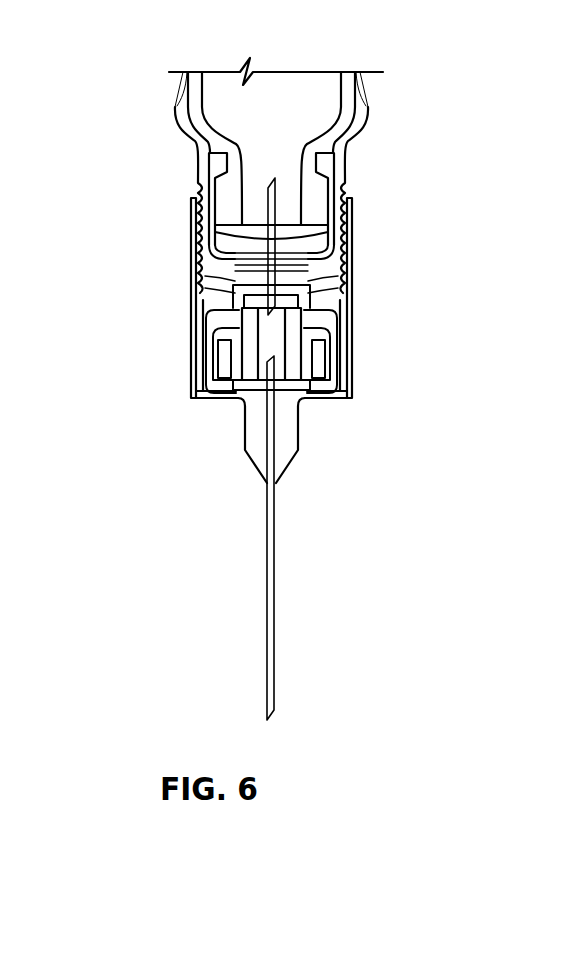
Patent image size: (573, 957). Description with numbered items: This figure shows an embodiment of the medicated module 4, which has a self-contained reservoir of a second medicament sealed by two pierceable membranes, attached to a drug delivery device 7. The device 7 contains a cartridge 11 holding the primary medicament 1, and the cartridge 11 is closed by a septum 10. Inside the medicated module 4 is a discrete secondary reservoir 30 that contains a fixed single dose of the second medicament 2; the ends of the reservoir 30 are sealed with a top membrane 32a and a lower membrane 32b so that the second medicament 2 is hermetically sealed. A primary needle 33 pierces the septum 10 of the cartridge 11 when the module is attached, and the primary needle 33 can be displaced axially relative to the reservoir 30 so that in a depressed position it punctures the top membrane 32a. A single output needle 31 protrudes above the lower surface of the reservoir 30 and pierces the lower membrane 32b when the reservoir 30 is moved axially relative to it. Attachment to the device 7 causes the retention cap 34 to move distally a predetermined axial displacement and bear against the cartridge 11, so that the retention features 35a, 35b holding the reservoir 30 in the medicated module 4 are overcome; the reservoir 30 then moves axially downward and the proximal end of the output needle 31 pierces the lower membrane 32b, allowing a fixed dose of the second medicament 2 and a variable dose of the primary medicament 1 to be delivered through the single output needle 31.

The primary medicament 1 is at (320, 90).
The cartridge 11 is at (347, 78).
The device 7 is at (355, 143).
The septum 10 is at (232, 238).
The primary needle 33 is at (273, 205).
The retention cap 34 is at (345, 295).
The top membrane 32a is at (298, 303).
The secondary reservoir 30 is at (306, 328).
The lower membrane 32b is at (308, 387).
The retention feature 35a is at (236, 310).
The retention feature 35b is at (226, 382).
The second medicament 2 is at (273, 365).
The output needle 31 is at (278, 605).
The medicated module 4 is at (103, 193).